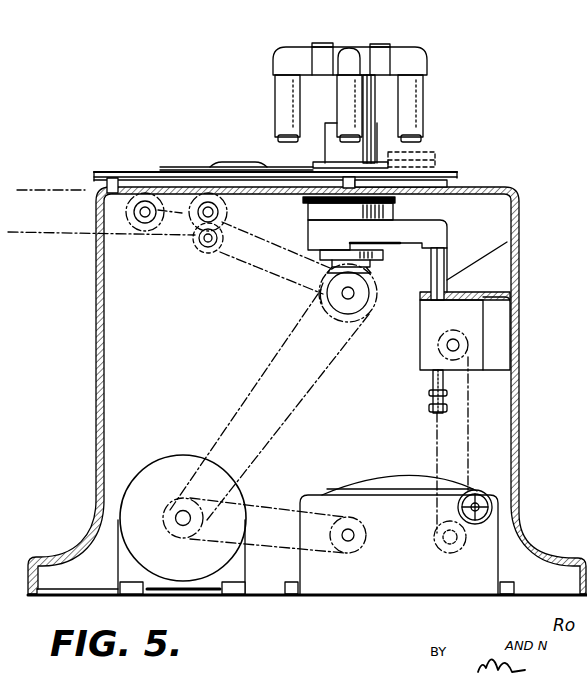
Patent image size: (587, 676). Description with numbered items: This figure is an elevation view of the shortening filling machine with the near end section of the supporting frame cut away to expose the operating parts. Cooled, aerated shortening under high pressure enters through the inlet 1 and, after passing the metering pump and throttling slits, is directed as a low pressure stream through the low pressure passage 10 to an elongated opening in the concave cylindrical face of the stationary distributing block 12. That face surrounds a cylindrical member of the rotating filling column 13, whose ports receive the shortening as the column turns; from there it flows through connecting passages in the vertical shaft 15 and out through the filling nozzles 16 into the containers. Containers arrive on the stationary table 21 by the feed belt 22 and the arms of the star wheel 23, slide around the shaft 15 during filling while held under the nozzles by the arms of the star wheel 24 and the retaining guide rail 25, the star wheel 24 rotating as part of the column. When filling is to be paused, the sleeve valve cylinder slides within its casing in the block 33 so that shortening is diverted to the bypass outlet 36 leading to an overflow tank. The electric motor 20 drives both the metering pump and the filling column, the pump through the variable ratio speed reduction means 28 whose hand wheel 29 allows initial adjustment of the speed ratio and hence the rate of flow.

The inlet 1 is at (428, 405).
The low pressure passage 10 is at (444, 268).
The distributing block 12 is at (403, 240).
The filling column 13 is at (338, 44).
The vertical shaft 15 is at (377, 105).
The filling nozzles 16 is at (277, 97).
The electric motor 20 is at (172, 462).
The stationary table 21 is at (290, 198).
The feed belt 22 is at (70, 233).
The star wheel 23 is at (163, 167).
The star wheel 24 is at (405, 166).
The retaining guide rail 25 is at (447, 177).
The variable ratio speed reduction means 28 is at (320, 495).
The hand wheel 29 is at (477, 492).
The block 33 is at (483, 332).
The bypass outlet 36 is at (428, 380).